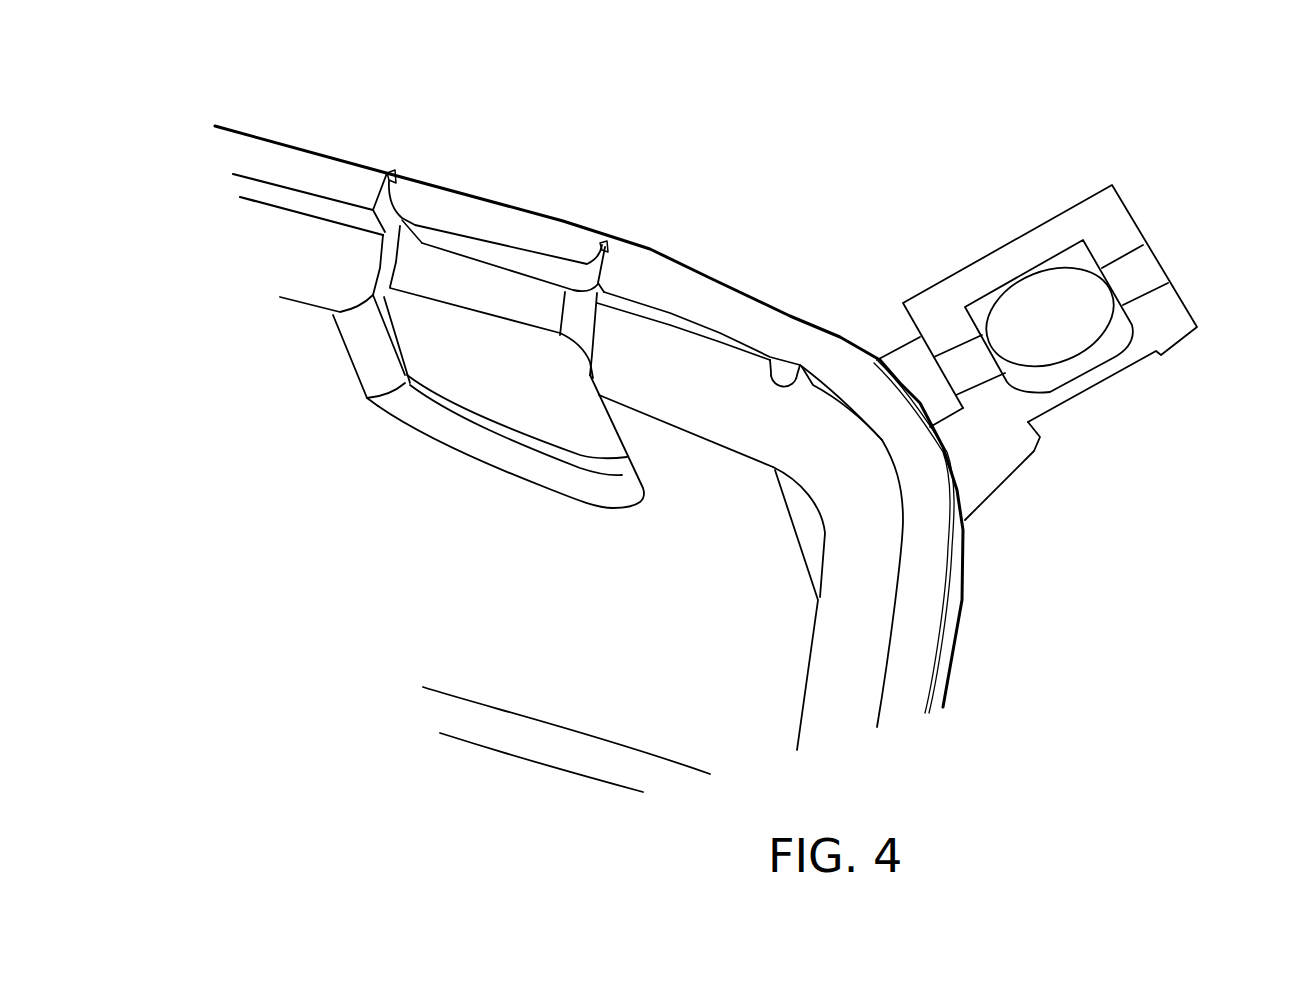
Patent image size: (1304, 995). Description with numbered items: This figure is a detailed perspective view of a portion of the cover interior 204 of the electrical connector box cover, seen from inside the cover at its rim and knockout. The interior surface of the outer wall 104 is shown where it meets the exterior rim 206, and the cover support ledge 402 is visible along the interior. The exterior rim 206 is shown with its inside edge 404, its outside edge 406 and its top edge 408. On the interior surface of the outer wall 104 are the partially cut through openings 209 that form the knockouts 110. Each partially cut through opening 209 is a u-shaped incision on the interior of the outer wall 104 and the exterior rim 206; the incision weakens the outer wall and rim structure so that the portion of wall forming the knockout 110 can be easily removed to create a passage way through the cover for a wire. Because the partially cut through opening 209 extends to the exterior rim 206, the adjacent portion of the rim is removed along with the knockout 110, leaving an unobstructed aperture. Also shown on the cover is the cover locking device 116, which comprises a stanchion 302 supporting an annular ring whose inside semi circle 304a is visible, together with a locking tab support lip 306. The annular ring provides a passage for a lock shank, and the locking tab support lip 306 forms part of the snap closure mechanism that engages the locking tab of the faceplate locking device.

The outer wall 104 is at (737, 541).
The knockout 110 is at (520, 490).
The cover locking device 116 is at (1138, 228).
The cover interior 204 is at (771, 642).
The exterior rim 206 is at (682, 300).
The partially cut through opening 209 is at (392, 172).
The stanchion 302 is at (1034, 456).
The inside semi circle 304a is at (1093, 357).
The locking tab support lip 306 is at (995, 248).
The cover support ledge 402 is at (733, 405).
The inside edge 404 is at (797, 373).
The outside edge 406 is at (945, 662).
The top edge 408 is at (920, 608).